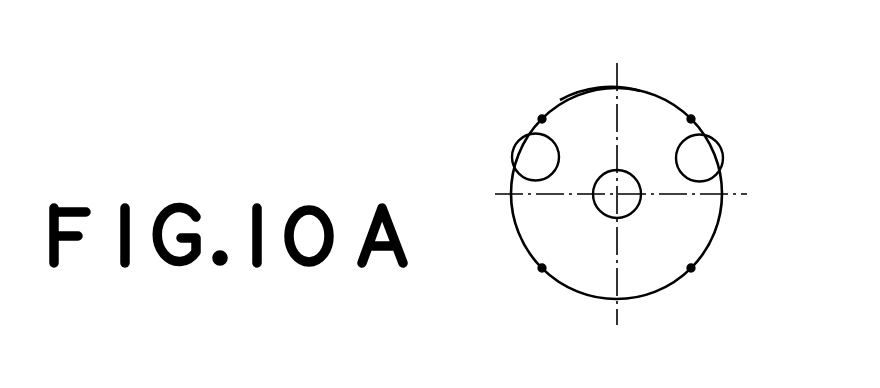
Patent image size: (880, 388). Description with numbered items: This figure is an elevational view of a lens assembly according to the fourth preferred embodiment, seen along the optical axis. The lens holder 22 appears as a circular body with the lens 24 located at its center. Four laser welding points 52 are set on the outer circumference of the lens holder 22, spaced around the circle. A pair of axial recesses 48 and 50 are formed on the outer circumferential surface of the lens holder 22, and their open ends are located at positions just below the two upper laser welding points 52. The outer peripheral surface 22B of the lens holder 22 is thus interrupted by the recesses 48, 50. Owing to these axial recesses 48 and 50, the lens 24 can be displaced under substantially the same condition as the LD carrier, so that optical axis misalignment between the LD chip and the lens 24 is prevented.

The lens holder 22 is at (718, 223).
The outer peripheral surface of body 22B is at (597, 79).
The lens 24 is at (620, 216).
The axial recess 48 is at (705, 163).
The axial recess 50 is at (528, 153).
The laser welding points 52 is at (538, 113).